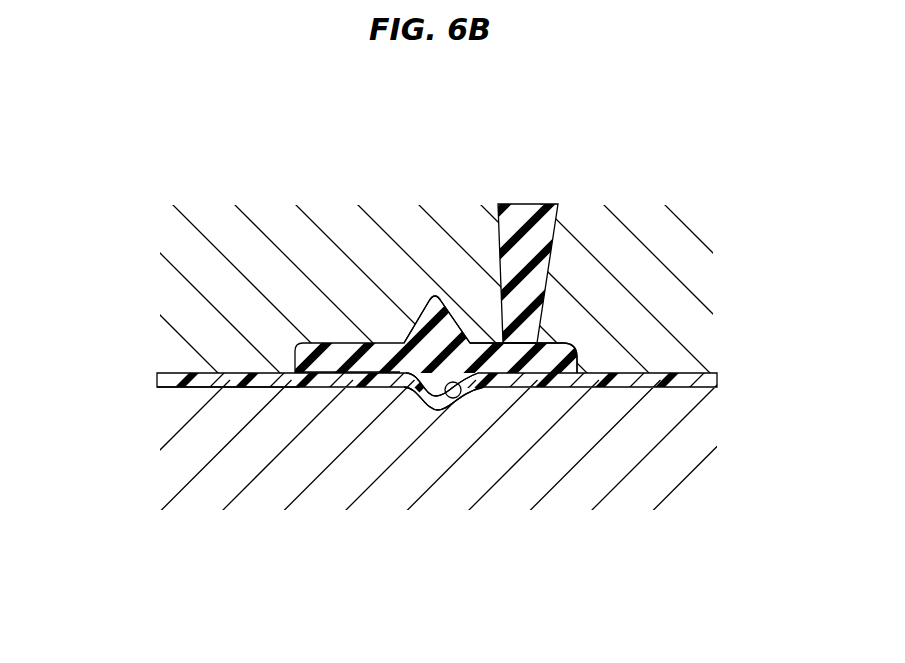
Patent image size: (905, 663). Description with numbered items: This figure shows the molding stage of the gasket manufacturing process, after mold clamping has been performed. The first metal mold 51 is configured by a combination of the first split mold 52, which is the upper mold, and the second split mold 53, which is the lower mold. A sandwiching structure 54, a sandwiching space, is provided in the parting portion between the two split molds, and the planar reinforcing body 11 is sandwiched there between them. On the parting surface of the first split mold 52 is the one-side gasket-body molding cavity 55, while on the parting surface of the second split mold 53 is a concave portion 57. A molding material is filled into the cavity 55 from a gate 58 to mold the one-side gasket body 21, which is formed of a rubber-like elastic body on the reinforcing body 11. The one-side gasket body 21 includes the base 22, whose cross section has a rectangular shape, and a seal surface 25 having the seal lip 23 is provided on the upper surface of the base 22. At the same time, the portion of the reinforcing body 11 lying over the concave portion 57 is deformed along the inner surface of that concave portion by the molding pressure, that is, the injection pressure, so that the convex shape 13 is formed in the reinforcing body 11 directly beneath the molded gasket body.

The reinforcing body 11 is at (498, 476).
The convex shape 13 is at (432, 400).
The one-side gasket body 21 is at (506, 350).
The base 22 is at (472, 244).
The seal lip 23 is at (435, 310).
The seal surface 25 is at (387, 360).
The first metal mold 51 is at (437, 337).
The first split mold 52 is at (185, 300).
The second split mold 53 is at (180, 455).
The sandwiching structure 54 is at (203, 390).
The one-side gasket-body molding cavity 55 is at (564, 343).
The concave portion 57 is at (452, 398).
The gate 58 is at (534, 262).